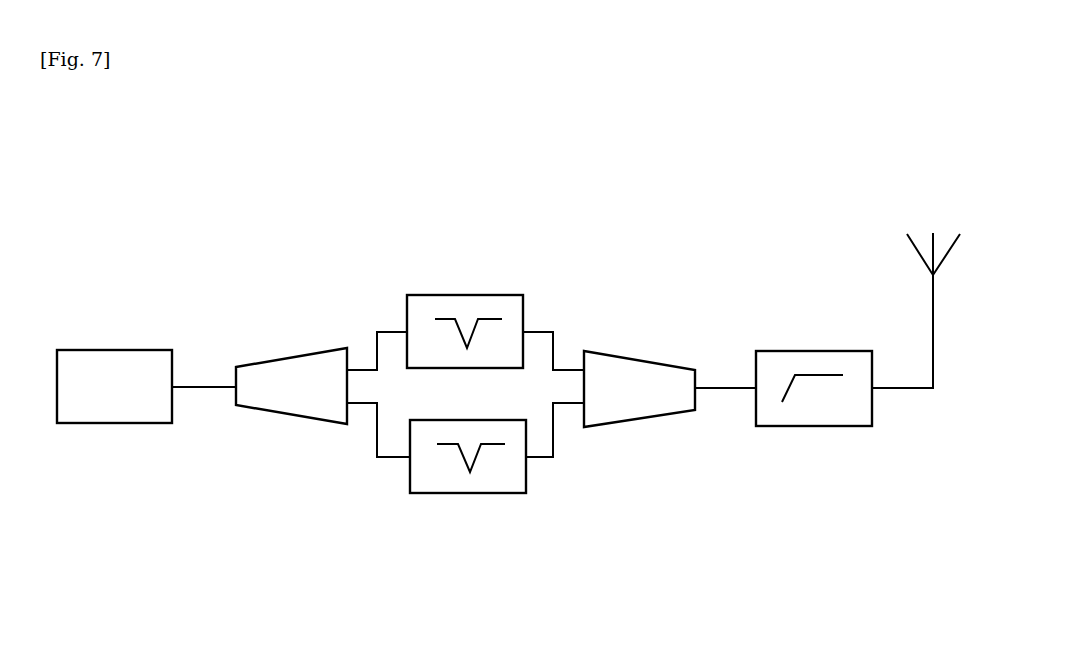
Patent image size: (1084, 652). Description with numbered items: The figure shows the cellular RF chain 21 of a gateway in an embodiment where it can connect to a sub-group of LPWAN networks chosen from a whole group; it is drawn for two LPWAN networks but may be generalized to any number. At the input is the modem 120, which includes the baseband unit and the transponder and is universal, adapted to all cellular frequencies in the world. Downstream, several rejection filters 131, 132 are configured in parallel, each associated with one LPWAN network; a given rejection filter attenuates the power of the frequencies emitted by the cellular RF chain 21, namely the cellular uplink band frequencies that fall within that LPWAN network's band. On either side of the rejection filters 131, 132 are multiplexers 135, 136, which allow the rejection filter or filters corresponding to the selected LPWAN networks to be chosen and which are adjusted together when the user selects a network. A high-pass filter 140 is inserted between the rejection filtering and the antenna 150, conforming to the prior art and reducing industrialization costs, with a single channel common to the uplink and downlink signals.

The cellular RF chain 21 is at (318, 182).
The modem 120 is at (116, 348).
The multiplexer 135 is at (290, 352).
The rejection filter 131 is at (470, 295).
The rejection filter 132 is at (489, 493).
The multiplexer 136 is at (640, 350).
The high-pass filter 140 is at (810, 350).
The antenna 150 is at (922, 240).